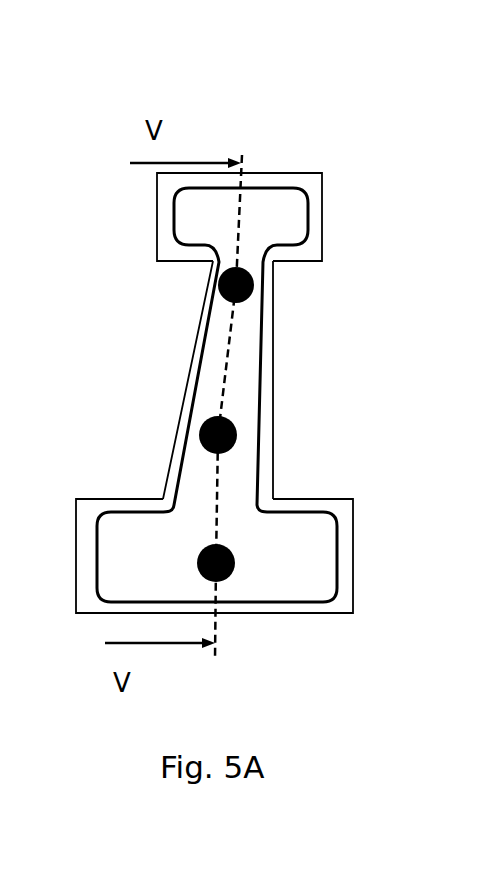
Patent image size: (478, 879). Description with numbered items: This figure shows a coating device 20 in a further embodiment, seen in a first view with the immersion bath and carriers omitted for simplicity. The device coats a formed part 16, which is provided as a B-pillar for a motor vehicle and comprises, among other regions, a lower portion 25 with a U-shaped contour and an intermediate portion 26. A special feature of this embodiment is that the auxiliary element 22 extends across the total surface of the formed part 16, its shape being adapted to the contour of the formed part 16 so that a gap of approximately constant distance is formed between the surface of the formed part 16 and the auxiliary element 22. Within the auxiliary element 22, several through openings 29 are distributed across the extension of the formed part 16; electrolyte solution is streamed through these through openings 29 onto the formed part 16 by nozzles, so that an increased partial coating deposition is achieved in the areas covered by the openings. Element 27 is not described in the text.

The coating device 20 is at (265, 124).
The lower portion 25 is at (303, 220).
The intermediate portion 26 is at (317, 567).
The auxiliary element 22 is at (273, 400).
The formed part 16 is at (263, 329).
The centroid line 27 is at (208, 380).
The through openings 29 is at (237, 437).